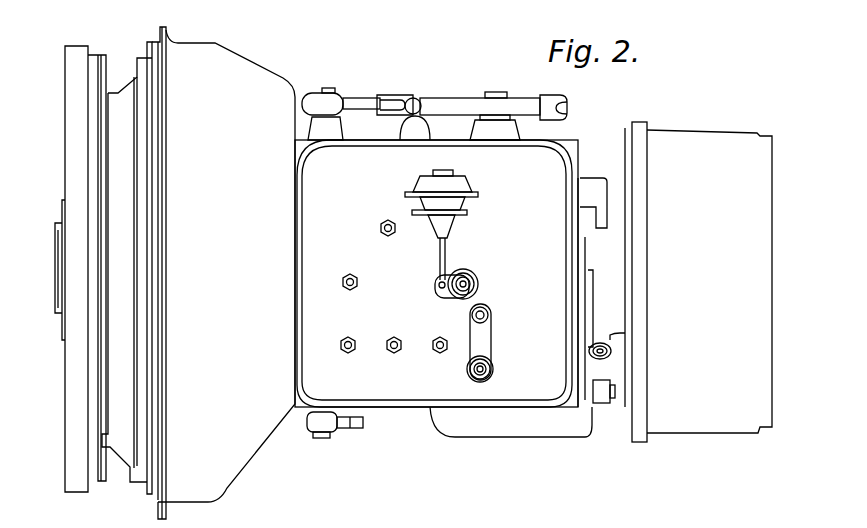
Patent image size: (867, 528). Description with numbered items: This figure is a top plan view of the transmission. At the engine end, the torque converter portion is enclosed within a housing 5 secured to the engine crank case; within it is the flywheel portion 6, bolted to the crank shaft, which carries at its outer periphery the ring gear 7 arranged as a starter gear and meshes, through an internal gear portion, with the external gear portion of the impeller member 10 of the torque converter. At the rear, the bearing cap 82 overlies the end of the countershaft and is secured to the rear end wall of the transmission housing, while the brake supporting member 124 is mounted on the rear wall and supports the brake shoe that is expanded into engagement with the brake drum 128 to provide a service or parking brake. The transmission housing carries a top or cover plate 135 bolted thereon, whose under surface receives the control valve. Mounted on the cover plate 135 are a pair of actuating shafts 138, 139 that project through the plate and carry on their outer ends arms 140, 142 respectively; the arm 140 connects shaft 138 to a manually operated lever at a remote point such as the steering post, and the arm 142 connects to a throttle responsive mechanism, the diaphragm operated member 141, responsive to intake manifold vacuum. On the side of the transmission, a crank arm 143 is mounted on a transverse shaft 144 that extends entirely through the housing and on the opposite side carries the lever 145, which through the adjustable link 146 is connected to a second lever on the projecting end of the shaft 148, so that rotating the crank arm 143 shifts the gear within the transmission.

The housing 5 is at (235, 70).
The flywheel portion 6 is at (90, 485).
The ring gear 7 is at (68, 490).
The impeller member 10 is at (130, 468).
The bearing cap 82 is at (612, 213).
The brake supporting member 124 is at (610, 243).
The brake drum 128 is at (704, 424).
The cover plate 135 is at (543, 165).
The actuating shaft 138 is at (492, 364).
The actuating shaft 139 is at (477, 284).
The arm 140 is at (487, 342).
The diaphragm operated member 141 is at (432, 187).
The arm 142 is at (437, 291).
The crank arm 143 is at (342, 430).
The transverse shaft 144 is at (333, 80).
The lever 145 is at (380, 86).
The adjustable link 146 is at (437, 89).
The shaft 148 is at (495, 92).